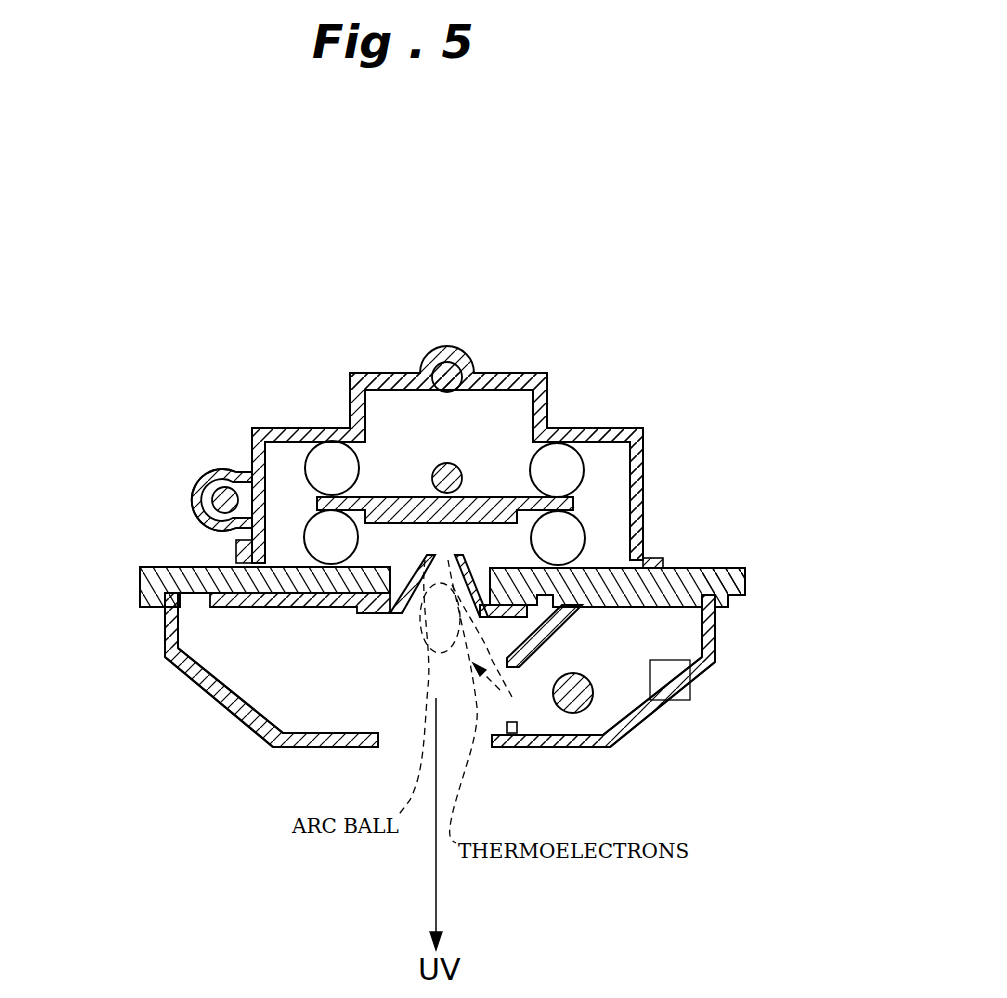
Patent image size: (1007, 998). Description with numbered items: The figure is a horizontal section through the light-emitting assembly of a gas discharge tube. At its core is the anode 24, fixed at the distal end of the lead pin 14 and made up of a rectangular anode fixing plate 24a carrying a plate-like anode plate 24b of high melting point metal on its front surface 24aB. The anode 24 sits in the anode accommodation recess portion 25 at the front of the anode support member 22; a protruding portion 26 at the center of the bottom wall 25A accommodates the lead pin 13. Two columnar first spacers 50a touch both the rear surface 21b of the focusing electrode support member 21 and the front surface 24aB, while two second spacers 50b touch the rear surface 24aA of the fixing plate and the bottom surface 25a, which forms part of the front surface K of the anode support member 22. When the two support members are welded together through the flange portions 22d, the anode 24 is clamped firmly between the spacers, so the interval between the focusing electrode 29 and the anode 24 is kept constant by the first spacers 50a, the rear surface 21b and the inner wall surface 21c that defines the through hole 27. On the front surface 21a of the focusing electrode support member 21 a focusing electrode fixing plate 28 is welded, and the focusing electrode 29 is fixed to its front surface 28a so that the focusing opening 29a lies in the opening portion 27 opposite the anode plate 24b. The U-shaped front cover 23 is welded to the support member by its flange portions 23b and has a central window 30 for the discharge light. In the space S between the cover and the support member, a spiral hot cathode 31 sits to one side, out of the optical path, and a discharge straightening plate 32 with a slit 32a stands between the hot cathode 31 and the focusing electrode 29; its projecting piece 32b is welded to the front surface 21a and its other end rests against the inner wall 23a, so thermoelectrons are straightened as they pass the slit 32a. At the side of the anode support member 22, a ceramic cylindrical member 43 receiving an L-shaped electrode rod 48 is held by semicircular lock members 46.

The lead pin 13 is at (449, 352).
The lead pin 14 is at (444, 470).
The focusing electrode support member 21 is at (742, 597).
The front surface of the focusing electrode support member 21a is at (213, 692).
The rear surface of the focusing electrode support member 21b is at (142, 568).
The inner wall surface of the focusing electrode support member 21c is at (347, 613).
The anode support member 22 is at (682, 408).
The flange portions of the anode support member 22d is at (236, 555).
The front cover 23 is at (247, 757).
The inner wall of the front cover 23a is at (562, 748).
The flange portions of the front cover 23b is at (165, 600).
The anode 24 is at (448, 381).
The anode fixing plate 24a is at (397, 383).
The anode plate 24b is at (318, 440).
The rear surface of the anode fixing plate 24aA is at (612, 484).
The front surface of the anode fixing plate 24aB is at (600, 520).
The anode accommodation recess portion 25 is at (618, 490).
The bottom surface of the anode accommodation recess portion 25a is at (592, 428).
The bottom wall of the anode accommodation recess portion 25A is at (612, 428).
The protruding portion 26 is at (517, 387).
The opening portion 27 is at (404, 565).
The focusing electrode fixing plate 28 is at (248, 607).
The front surface of the focusing electrode fixing plate 28a is at (305, 607).
The focusing electrode 29 is at (385, 613).
The focusing opening 29a is at (400, 617).
The window 30 is at (406, 762).
The hot cathode 31 is at (603, 742).
The discharge straightening plate 32 is at (545, 628).
The slit 32a is at (505, 726).
The projecting piece 32b is at (690, 672).
The cylindrical member 43 is at (200, 490).
The lock members 46 is at (202, 480).
The electrode rod 48 is at (212, 500).
The first spacers 50a is at (322, 532).
The second spacers 50b is at (328, 466).
The front surface of the anode support member K is at (742, 568).
The space S is at (672, 682).